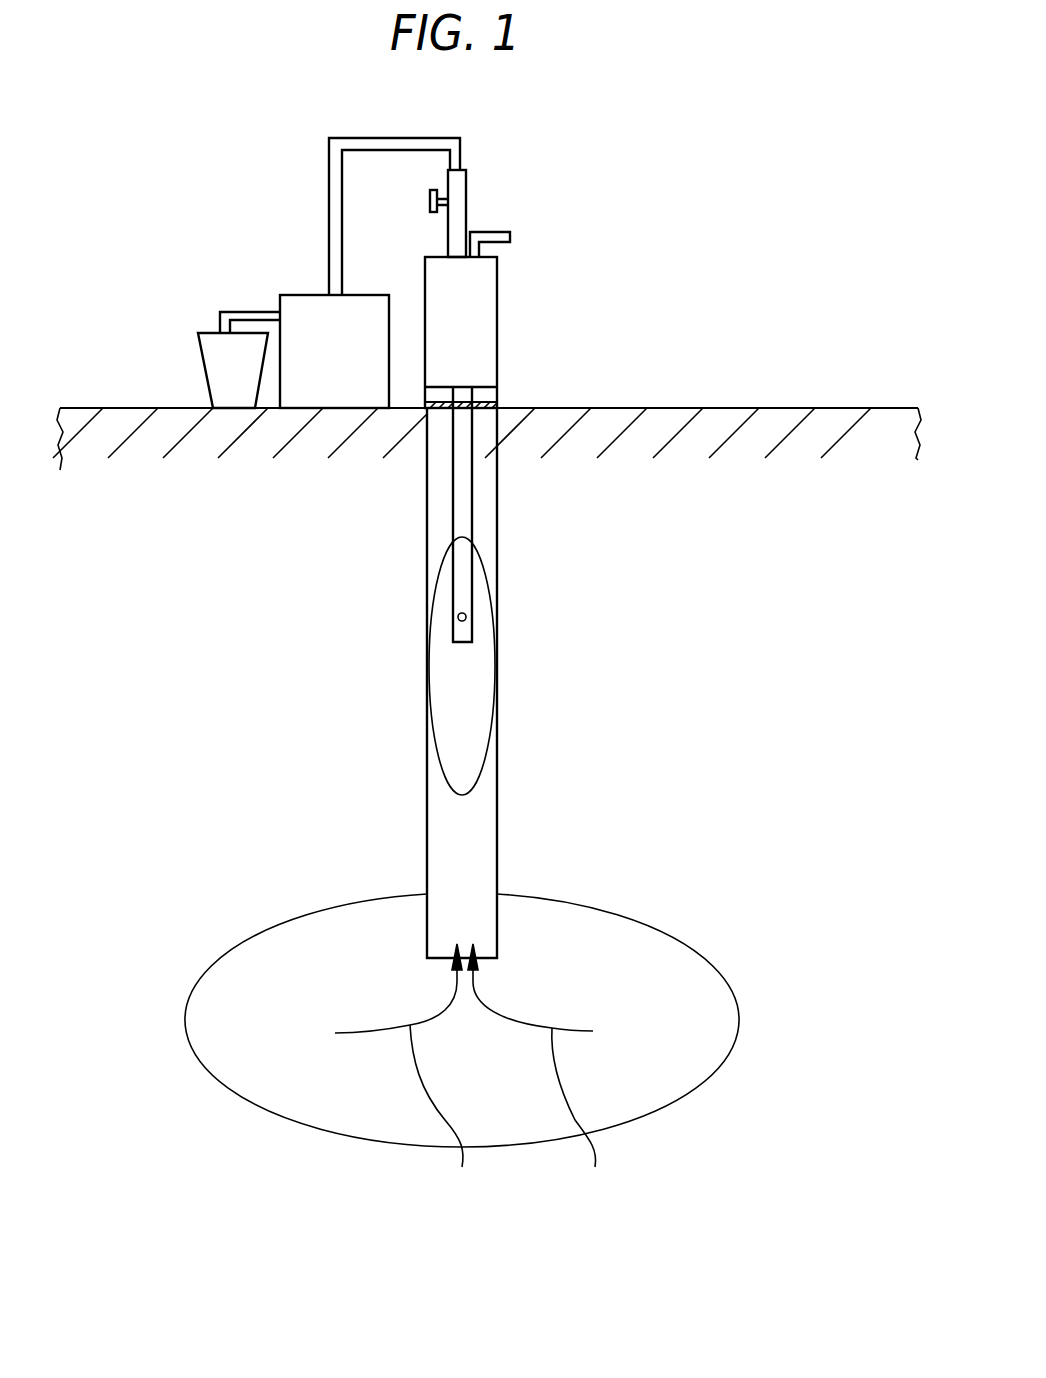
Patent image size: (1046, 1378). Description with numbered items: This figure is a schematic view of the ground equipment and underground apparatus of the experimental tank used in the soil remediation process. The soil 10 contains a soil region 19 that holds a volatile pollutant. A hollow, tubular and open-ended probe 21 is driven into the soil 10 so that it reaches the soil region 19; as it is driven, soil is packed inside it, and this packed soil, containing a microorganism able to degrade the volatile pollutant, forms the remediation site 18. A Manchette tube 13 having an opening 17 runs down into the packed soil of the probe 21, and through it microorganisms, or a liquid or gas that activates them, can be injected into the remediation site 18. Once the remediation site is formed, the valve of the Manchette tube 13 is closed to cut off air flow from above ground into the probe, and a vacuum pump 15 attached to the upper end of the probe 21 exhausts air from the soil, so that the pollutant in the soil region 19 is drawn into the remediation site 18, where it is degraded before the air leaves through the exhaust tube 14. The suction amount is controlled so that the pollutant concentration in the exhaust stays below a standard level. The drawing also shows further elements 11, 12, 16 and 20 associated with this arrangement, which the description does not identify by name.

The soil 10 is at (793, 462).
The hopper 11 is at (213, 360).
The pump unit 12 is at (328, 398).
The Manchette tube 13 is at (456, 181).
The exhaust tube 14 is at (495, 230).
The vacuum pump 15 is at (487, 314).
The sealing plate 16 is at (488, 412).
The opening 17 is at (466, 614).
The remediation site 18 is at (483, 700).
The soil region 19 is at (555, 928).
The flow lines 20 is at (472, 1072).
The probe 21 is at (490, 822).